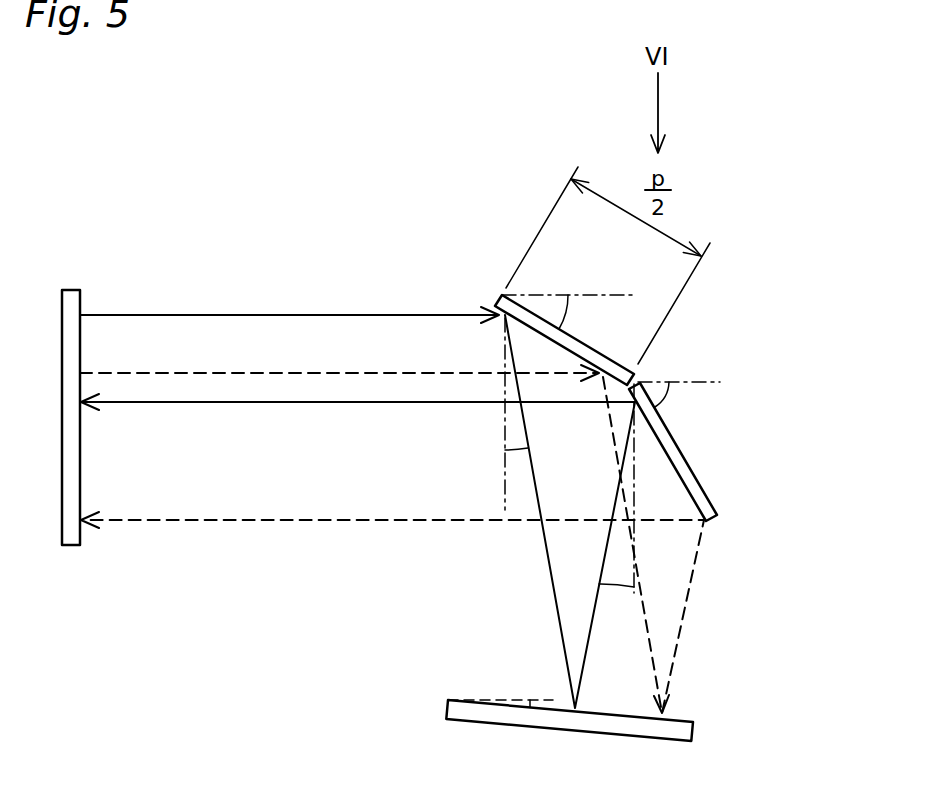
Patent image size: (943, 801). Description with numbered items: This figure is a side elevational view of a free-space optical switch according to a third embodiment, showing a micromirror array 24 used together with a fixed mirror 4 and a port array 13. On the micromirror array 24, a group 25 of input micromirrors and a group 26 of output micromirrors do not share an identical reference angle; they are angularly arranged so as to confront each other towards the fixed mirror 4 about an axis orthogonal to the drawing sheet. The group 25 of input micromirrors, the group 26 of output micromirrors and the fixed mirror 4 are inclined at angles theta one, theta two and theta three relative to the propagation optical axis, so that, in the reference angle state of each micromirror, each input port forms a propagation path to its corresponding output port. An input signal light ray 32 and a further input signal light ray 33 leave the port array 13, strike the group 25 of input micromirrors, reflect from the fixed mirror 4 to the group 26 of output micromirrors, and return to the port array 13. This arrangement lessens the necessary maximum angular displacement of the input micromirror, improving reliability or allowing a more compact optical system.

The port array 13 is at (63, 336).
The input signal light ray 32 is at (120, 316).
The input signal light ray 33 is at (133, 374).
The micromirror array 24 is at (641, 380).
The group of input micromirrors 25 is at (604, 354).
The group of output micromirrors 26 is at (695, 452).
The fixed mirror 4 is at (661, 741).